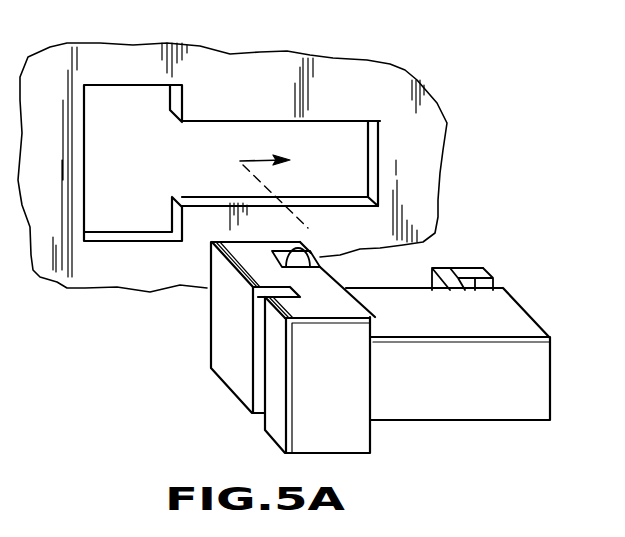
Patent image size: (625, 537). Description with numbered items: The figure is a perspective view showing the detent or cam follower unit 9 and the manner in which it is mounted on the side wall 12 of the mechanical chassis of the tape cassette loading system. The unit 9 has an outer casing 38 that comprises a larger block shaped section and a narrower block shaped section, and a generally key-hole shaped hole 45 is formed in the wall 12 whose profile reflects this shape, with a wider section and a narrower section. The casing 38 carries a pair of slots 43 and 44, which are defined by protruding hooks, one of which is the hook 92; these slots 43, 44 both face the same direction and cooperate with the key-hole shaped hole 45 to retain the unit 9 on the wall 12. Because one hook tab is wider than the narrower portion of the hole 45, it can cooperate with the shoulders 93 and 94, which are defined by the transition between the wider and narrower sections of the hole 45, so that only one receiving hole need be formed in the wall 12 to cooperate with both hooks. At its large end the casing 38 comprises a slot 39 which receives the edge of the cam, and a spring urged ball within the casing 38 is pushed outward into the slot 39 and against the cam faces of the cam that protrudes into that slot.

The detent unit 9 is at (509, 208).
The side wall 12 is at (338, 78).
The casing 38 is at (452, 398).
The slot 39 is at (253, 297).
The slot 43 is at (317, 258).
The slot 44 is at (485, 275).
The key-hole shaped hole 45 is at (374, 151).
The hook 92 is at (458, 273).
The shoulder 93 is at (193, 100).
The shoulder 94 is at (187, 220).